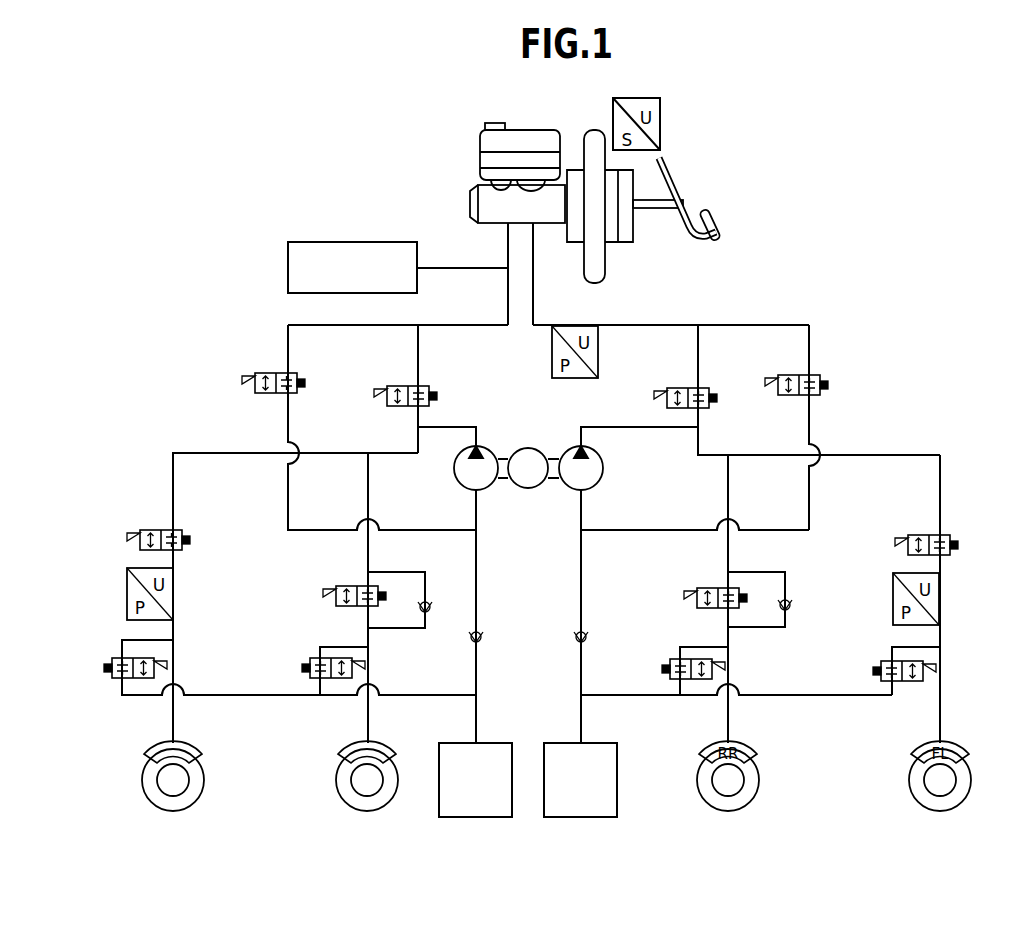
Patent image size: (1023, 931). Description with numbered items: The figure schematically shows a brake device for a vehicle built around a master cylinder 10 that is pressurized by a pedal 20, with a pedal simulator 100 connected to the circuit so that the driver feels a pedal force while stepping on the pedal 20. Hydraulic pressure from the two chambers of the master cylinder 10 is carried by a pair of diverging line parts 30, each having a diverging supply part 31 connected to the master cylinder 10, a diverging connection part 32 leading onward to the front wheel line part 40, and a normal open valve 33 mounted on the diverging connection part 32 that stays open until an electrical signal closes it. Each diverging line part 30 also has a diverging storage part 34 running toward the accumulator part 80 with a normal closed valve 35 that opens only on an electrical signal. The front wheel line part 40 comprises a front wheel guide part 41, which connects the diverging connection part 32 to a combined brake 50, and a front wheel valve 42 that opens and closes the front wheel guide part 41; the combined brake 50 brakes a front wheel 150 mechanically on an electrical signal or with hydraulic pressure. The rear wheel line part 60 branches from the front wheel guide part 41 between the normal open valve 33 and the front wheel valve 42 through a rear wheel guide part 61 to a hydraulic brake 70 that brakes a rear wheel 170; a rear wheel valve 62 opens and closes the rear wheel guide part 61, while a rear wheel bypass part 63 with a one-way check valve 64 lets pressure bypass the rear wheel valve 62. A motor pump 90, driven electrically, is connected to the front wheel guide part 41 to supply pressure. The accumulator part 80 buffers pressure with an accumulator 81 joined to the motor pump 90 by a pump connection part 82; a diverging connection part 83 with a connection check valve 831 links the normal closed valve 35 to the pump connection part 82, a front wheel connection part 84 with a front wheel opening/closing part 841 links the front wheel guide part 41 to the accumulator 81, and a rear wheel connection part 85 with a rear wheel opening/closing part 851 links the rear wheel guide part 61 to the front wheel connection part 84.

The master cylinder 10 is at (478, 165).
The pedal 20 is at (654, 232).
The pedal simulator 100 is at (350, 241).
The diverging line part 30 is at (132, 257).
The diverging supply part 31 is at (465, 325).
The diverging connection part 32 is at (418, 335).
The normal open valve 33 is at (375, 393).
The diverging storage part 34 is at (288, 347).
The normal closed valve 35 is at (243, 383).
The front wheel line part 40 is at (68, 490).
The front wheel guide part 41 is at (173, 493).
The front wheel valve 42 is at (128, 540).
The combined brake 50 is at (203, 748).
The rear wheel line part 60 is at (910, 343).
The rear wheel guide part 61 is at (730, 473).
The rear wheel valve 62 is at (745, 585).
The rear wheel bypass part 63 is at (786, 583).
The check valve 64 is at (787, 603).
The hydraulic brake 70 is at (397, 748).
The accumulator part 80 is at (488, 736).
The accumulator 81 is at (578, 819).
The pump connection part 82 is at (578, 597).
The diverging connection part 83 is at (625, 533).
The front wheel connection part 84 is at (826, 699).
The rear wheel connection part 85 is at (678, 692).
The motor pump 90 is at (528, 446).
The front wheel 150 is at (173, 812).
The rear wheel 170 is at (367, 812).
The connection check valve 831 is at (588, 633).
The front wheel opening/closing part 841 is at (942, 676).
The rear wheel opening/closing part 851 is at (740, 667).